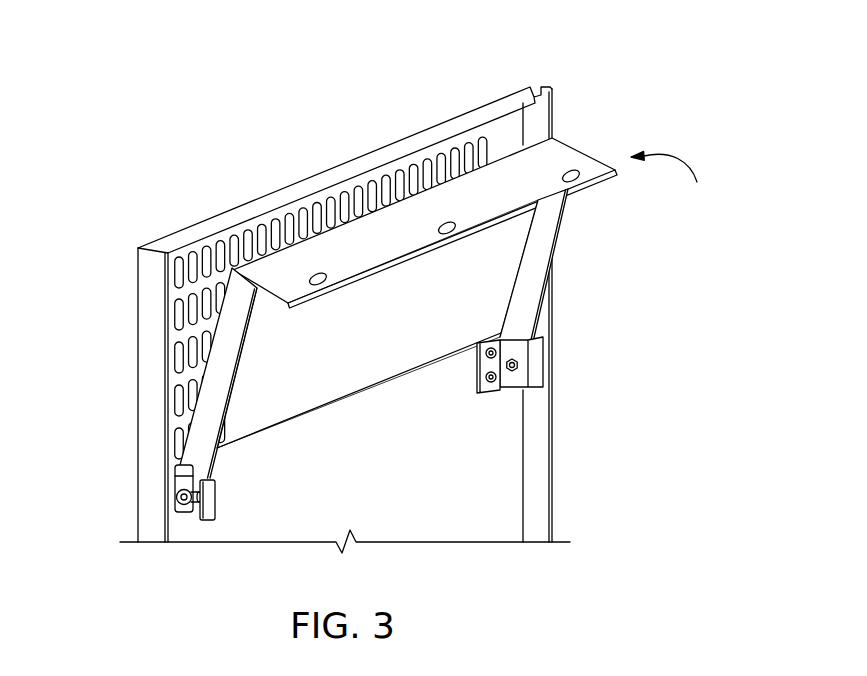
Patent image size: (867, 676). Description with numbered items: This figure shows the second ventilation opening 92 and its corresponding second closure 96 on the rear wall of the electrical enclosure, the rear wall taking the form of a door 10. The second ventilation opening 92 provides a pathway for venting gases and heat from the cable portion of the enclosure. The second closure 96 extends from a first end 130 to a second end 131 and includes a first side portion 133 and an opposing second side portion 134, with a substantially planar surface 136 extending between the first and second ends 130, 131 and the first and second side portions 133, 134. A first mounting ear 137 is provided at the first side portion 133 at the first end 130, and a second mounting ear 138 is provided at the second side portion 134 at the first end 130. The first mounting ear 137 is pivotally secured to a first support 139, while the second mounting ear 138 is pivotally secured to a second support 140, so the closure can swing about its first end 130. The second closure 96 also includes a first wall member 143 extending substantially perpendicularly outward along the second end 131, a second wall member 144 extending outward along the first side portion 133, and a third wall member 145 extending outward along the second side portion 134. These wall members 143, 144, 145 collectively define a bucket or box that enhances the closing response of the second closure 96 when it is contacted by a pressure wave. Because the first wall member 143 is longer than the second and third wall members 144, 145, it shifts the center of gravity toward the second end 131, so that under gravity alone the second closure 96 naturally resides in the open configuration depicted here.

The door 10 is at (482, 497).
The second ventilation opening 92 is at (464, 140).
The second closure 96 is at (674, 180).
The first end 130 is at (390, 387).
The second end 131 is at (311, 212).
The first side portion 133 is at (205, 367).
The second side portion 134 is at (517, 255).
The substantially planar surface 136 is at (293, 358).
The first mounting ear 137 is at (172, 490).
The second mounting ear 138 is at (527, 341).
The first support 139 is at (208, 505).
The second support 140 is at (537, 375).
The first wall member 143 is at (402, 225).
The second wall member 144 is at (220, 325).
The third wall member 145 is at (545, 307).